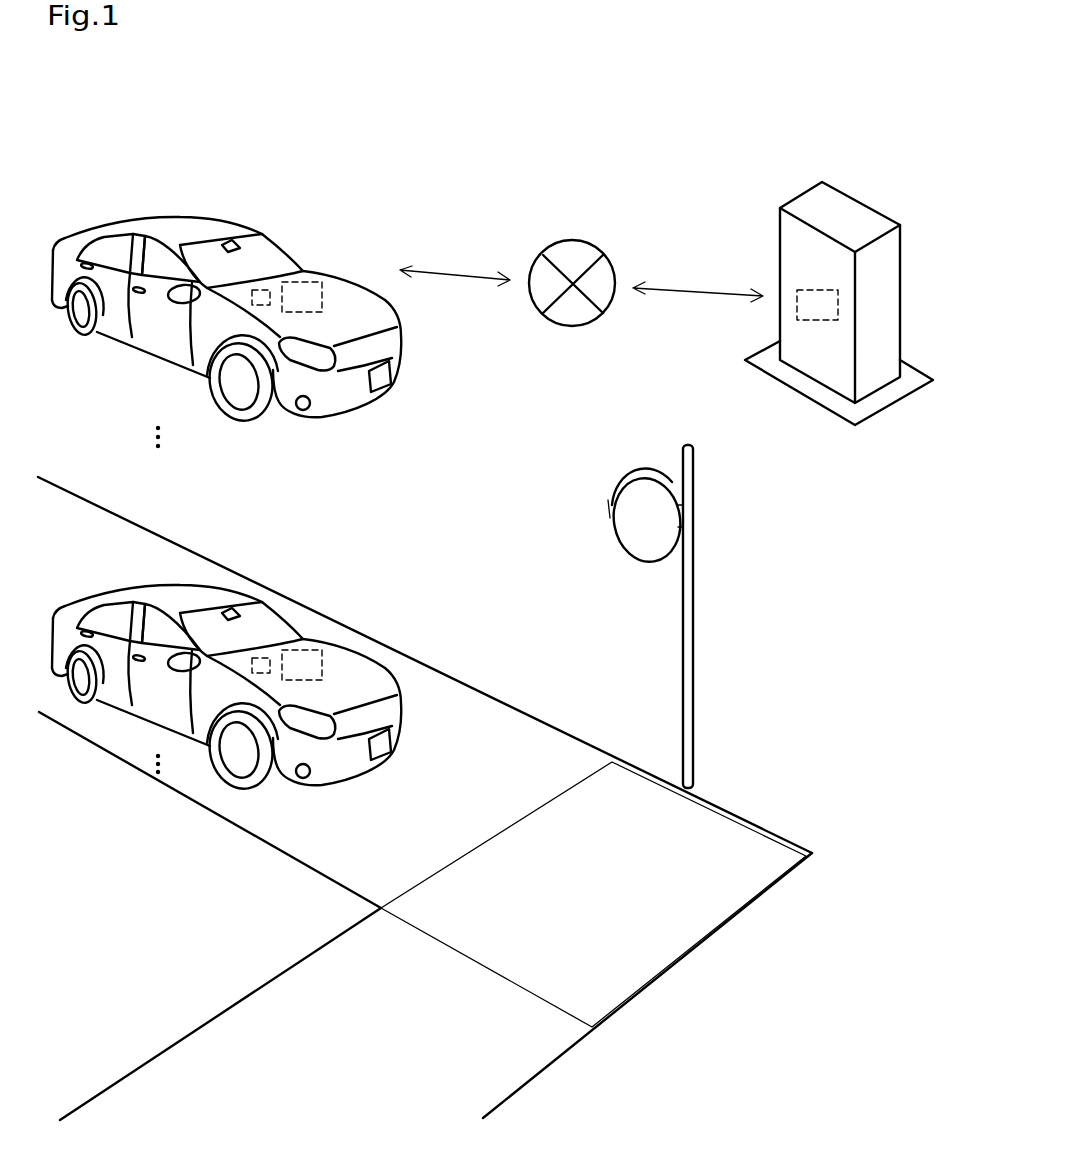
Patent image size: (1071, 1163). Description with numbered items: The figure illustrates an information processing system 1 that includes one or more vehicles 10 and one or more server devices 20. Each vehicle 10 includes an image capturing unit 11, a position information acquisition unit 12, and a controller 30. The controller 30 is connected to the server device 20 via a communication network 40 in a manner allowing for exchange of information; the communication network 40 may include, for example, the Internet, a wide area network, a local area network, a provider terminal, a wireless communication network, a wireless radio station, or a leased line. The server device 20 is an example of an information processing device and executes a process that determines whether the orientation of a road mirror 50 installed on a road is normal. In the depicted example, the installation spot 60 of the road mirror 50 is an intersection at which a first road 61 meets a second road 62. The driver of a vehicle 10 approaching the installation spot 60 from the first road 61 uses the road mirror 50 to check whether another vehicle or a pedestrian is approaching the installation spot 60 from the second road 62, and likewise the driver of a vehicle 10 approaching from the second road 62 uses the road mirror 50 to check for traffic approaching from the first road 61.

The information processing system 1 is at (908, 168).
The vehicle 10 is at (174, 218).
The image capturing unit 11 is at (238, 243).
The position information acquisition unit 12 is at (259, 289).
The server device 20 is at (817, 320).
The controller 30 is at (311, 281).
The communication network 40 is at (572, 240).
The road mirror 50 is at (640, 481).
The installation spot 60 is at (753, 843).
The first road 61 is at (467, 712).
The second road 62 is at (243, 1023).